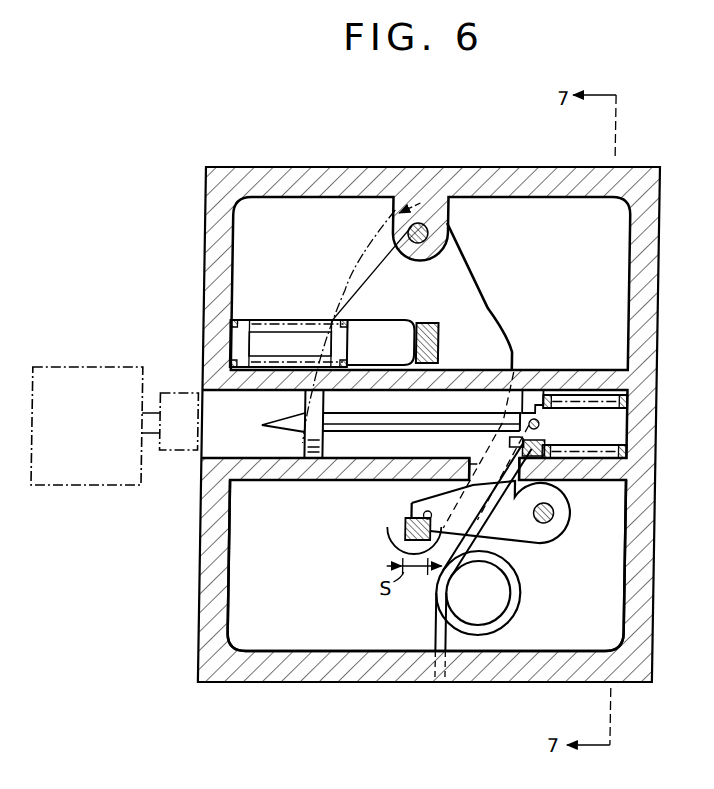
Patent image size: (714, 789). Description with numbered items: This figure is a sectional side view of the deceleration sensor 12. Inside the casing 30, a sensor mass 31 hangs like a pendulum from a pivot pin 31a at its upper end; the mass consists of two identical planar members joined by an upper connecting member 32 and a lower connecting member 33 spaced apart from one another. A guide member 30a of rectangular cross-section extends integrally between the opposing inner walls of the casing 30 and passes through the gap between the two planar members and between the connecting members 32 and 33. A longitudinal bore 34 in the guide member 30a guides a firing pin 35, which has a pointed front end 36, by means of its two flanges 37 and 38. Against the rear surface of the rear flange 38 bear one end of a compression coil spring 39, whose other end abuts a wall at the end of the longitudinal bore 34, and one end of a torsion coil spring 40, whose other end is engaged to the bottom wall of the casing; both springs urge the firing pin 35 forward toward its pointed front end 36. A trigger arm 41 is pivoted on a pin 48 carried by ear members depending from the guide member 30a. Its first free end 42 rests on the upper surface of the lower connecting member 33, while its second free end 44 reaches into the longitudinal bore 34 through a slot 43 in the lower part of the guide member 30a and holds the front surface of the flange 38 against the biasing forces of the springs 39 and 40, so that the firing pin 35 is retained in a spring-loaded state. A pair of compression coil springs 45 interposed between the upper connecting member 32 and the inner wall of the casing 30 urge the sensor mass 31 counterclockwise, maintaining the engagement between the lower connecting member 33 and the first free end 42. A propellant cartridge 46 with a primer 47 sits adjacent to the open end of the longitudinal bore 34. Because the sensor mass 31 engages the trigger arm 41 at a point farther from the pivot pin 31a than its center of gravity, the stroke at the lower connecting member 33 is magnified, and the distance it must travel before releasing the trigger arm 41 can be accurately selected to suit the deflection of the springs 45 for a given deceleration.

The deceleration sensor 12 is at (557, 160).
The casing 30 is at (247, 167).
The guide member 30a is at (255, 488).
The sensor mass 31 is at (484, 313).
The pivot pin 31a is at (443, 233).
The upper connecting member 32 is at (426, 323).
The lower connecting member 33 is at (397, 543).
The longitudinal bore 34 is at (333, 434).
The firing pin 35 is at (383, 440).
The pointed front end 36 is at (268, 428).
The flange 37 is at (301, 460).
The flange 38 is at (536, 392).
The compression coil spring 39 is at (585, 395).
The torsion coil spring 40 is at (516, 615).
The trigger arm 41 is at (509, 543).
The first free end 42 is at (404, 512).
The slot 43 is at (472, 464).
The second free end 44 is at (509, 438).
The compression coil springs 45 is at (282, 320).
The propellant cartridge 46 is at (90, 485).
The primer 47 is at (189, 452).
The pin 48 is at (552, 521).